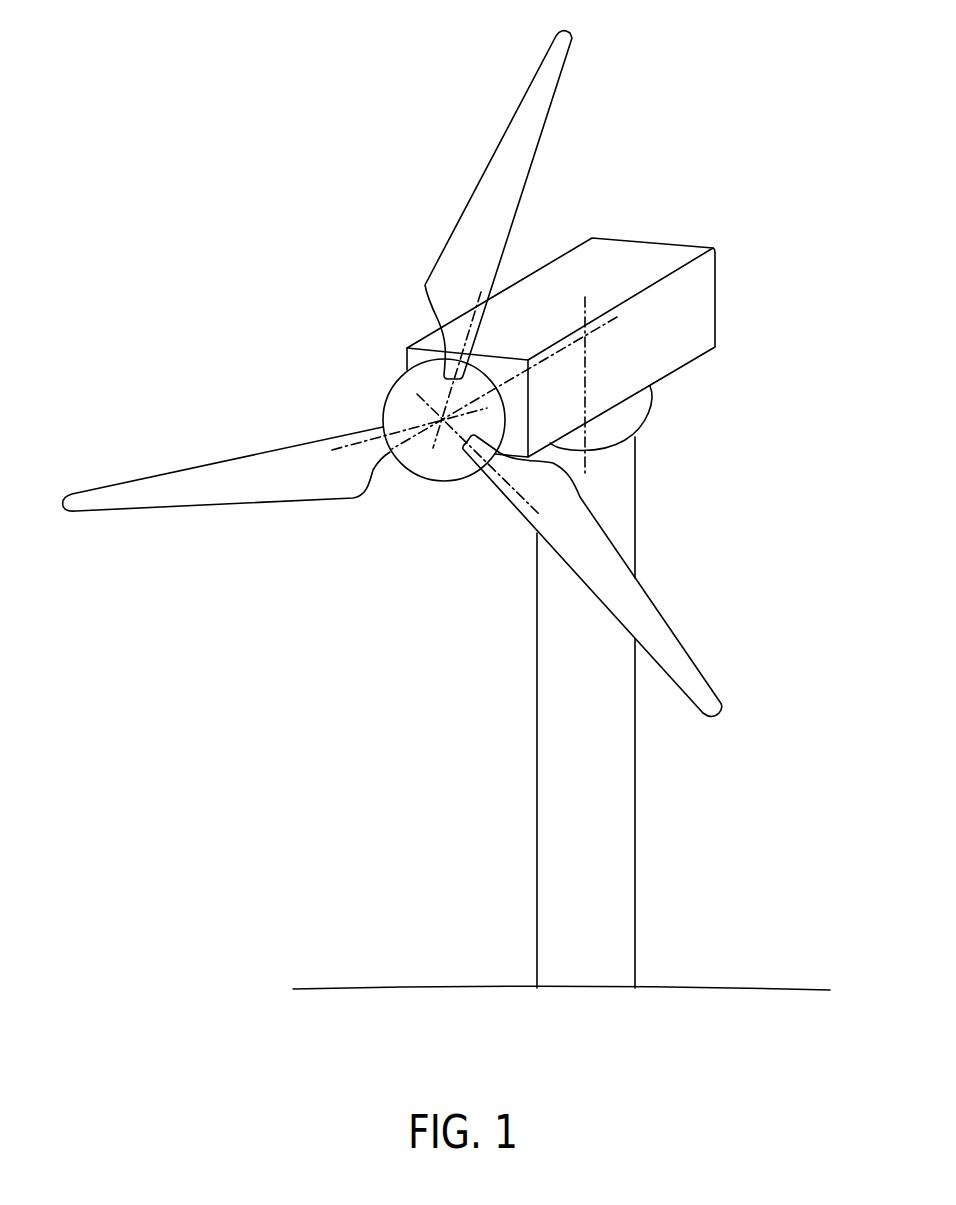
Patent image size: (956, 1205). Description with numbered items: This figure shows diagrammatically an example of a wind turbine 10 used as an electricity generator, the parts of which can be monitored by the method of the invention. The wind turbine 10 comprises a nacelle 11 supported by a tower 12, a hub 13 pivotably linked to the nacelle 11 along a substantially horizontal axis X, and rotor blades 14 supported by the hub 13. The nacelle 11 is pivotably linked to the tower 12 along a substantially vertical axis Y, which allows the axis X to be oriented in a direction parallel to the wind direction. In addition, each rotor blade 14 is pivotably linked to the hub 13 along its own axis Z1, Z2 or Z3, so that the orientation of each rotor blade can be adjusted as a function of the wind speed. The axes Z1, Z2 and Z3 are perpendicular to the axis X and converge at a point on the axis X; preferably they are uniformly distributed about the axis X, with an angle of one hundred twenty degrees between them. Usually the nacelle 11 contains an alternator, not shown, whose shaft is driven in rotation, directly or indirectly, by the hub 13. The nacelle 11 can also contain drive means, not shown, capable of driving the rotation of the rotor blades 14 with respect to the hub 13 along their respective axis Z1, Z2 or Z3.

The wind turbine 10 is at (270, 236).
The nacelle 11 is at (635, 258).
The tower 12 is at (635, 495).
The hub 13 is at (413, 475).
The rotor blades 14 is at (510, 120).
The axis X is at (597, 330).
The axis Y is at (585, 383).
The axis Z1 is at (488, 301).
The axis Z2 is at (402, 430).
The axis Z3 is at (520, 500).